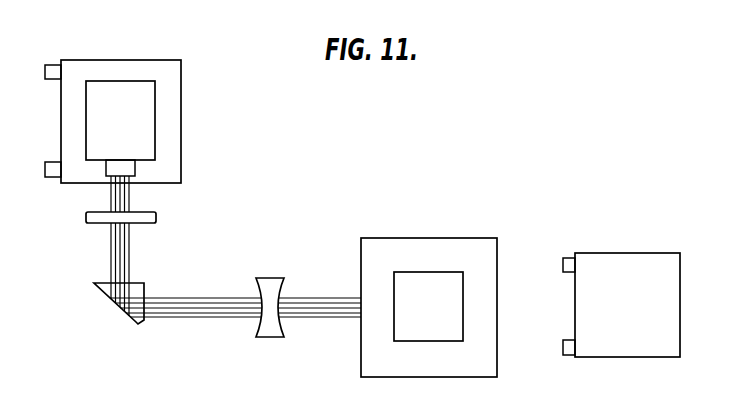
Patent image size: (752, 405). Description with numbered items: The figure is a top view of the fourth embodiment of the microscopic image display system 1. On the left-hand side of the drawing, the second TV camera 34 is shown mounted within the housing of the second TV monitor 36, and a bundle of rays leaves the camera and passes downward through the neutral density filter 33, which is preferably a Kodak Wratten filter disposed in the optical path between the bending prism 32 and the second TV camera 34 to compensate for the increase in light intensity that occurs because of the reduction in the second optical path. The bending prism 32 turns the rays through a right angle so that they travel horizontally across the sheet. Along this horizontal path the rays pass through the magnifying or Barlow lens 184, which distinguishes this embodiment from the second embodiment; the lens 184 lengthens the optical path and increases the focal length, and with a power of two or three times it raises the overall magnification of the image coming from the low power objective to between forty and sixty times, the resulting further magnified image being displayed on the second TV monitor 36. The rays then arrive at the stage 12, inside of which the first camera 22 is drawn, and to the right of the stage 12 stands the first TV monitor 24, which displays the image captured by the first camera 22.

The imaging system 1 is at (523, 151).
The stage 12 is at (488, 263).
The first camera 22 is at (460, 335).
The first TV monitor 24 is at (670, 297).
The bending prism 32 is at (99, 290).
The neutral density filter 33 is at (87, 220).
The second TV camera 34 is at (152, 120).
The second TV monitor 36 is at (142, 62).
The Barlow lens 184 is at (272, 279).